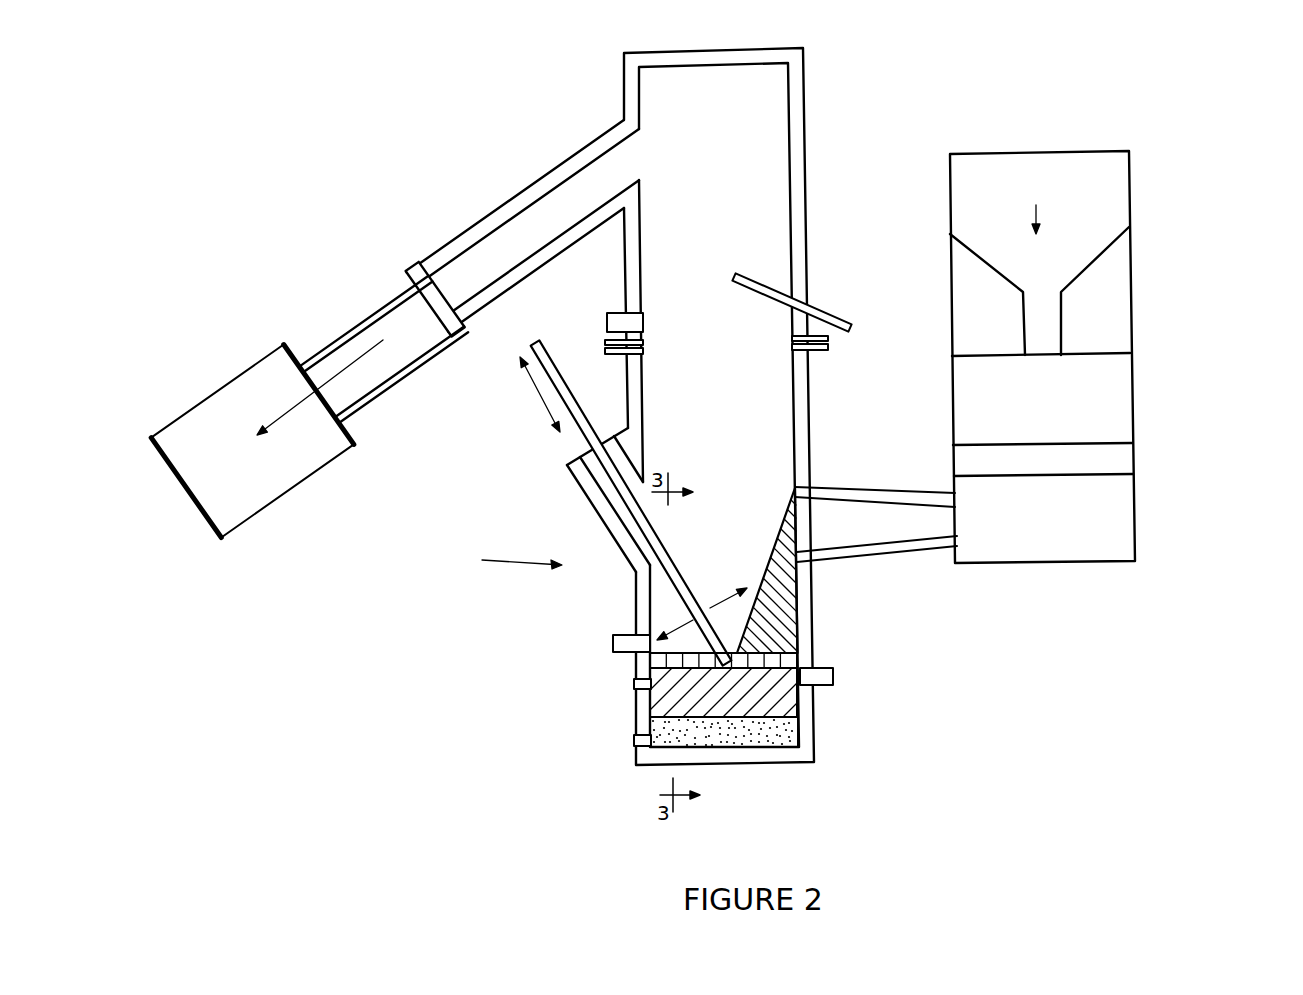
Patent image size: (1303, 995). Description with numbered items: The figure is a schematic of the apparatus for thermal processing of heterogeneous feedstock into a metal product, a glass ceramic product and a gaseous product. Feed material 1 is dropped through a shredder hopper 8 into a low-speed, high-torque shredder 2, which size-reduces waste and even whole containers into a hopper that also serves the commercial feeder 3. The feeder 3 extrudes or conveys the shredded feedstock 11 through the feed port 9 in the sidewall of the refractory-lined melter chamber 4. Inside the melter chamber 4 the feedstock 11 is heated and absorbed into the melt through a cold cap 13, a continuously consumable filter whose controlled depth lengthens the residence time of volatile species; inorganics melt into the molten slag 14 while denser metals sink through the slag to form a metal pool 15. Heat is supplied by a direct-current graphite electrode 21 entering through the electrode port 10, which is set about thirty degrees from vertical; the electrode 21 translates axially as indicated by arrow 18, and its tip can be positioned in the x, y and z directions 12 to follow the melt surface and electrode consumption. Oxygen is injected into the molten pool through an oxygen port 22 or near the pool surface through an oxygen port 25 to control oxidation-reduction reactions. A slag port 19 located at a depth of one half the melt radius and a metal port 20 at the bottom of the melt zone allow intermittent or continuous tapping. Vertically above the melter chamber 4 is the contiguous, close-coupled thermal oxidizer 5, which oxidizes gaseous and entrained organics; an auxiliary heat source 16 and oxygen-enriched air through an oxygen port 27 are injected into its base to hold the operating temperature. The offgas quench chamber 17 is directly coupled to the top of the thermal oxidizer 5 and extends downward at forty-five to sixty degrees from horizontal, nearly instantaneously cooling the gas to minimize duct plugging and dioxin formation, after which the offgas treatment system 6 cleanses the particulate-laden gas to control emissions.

The feed material 1 is at (1044, 197).
The shredder 2 is at (1087, 357).
The feeder 3 is at (1090, 489).
The melter chamber 4 is at (507, 558).
The thermal oxidizer 5 is at (807, 193).
The offgas treatment system 6 is at (243, 372).
The shredder hopper 8 is at (1101, 255).
The feed port 9 is at (812, 520).
The electrode port 10 is at (585, 459).
The feedstock 11 is at (773, 573).
The x, y, and z directions 12 is at (702, 603).
The cold cap 13 is at (783, 652).
The molten slag 14 is at (779, 694).
The metal pool 15 is at (792, 740).
The auxiliary heat source 16 is at (825, 310).
The offgas quench chamber 17 is at (464, 271).
The axial translation arrow 18 is at (528, 394).
The slag port 19 is at (636, 683).
The metal port 20 is at (636, 740).
The graphite electrode 21 is at (565, 380).
The oxygen port 22 is at (854, 666).
The oxygen port 25 is at (613, 636).
The oxygen port 27 is at (607, 322).